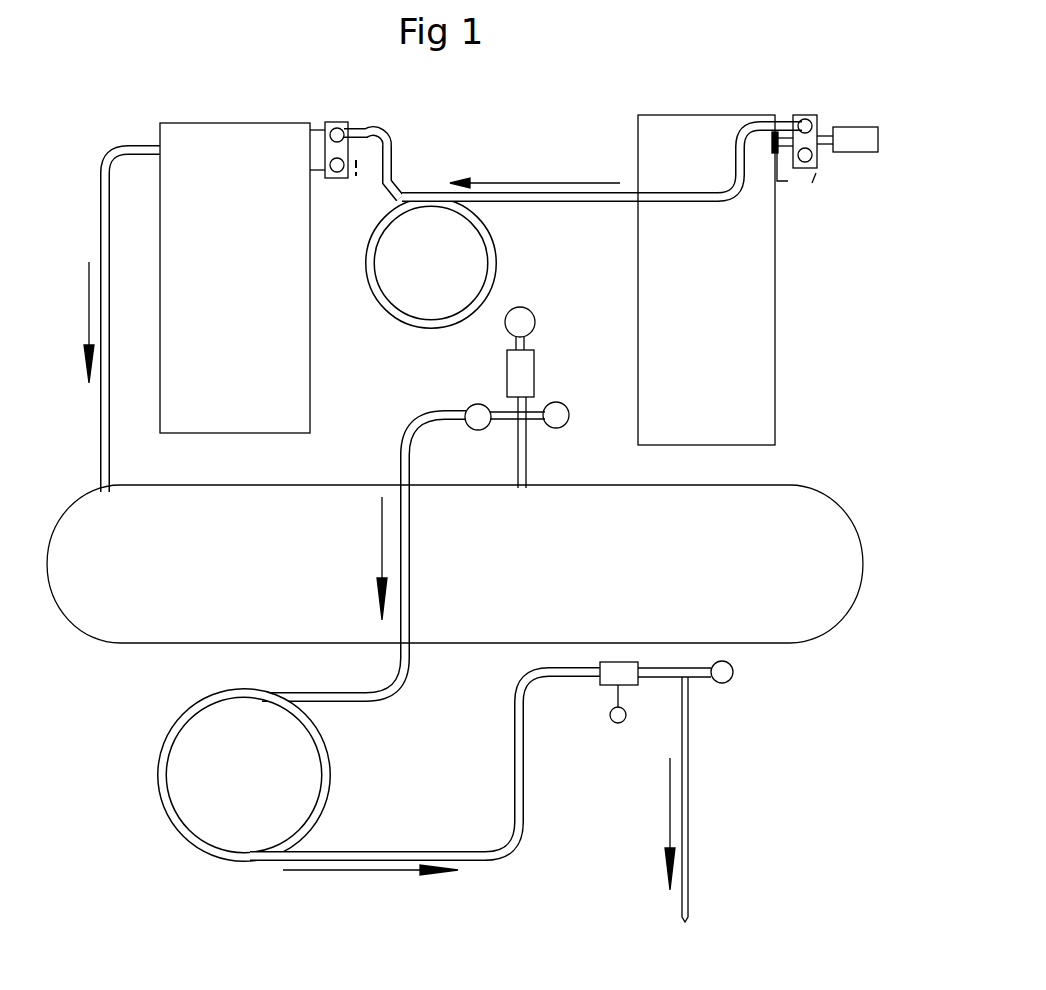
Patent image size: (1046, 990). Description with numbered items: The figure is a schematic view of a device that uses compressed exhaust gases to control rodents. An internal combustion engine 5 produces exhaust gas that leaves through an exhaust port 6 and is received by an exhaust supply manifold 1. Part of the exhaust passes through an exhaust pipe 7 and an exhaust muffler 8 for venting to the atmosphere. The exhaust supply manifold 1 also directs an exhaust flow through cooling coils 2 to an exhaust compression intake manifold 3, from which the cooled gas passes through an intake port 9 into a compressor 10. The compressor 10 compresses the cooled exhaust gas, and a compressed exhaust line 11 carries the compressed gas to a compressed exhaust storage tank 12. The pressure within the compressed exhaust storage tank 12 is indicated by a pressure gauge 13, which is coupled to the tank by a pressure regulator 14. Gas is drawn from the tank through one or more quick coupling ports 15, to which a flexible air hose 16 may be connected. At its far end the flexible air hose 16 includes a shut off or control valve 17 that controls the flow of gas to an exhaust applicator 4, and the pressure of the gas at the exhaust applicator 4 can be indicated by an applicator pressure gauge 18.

The exhaust supply manifold 1 is at (812, 183).
The cooling coils 2 is at (427, 165).
The exhaust compression intake manifold 3 is at (329, 113).
The exhaust applicator 4 is at (695, 679).
The internal combustion engine 5 is at (780, 258).
The exhaust port 6 is at (788, 164).
The exhaust pipe 7 is at (824, 133).
The exhaust muffler 8 is at (877, 122).
The intake port 9 is at (323, 120).
The compressor 10 is at (221, 118).
The compressed exhaust line 11 is at (98, 199).
The compressed exhaust storage tank 12 is at (223, 487).
The pressure gauge 13 is at (540, 320).
The pressure regulator 14 is at (537, 378).
The quick coupling ports 15 is at (483, 432).
The flexible air hose 16 is at (153, 786).
The shut off or control valve 17 is at (607, 688).
The applicator pressure gauge 18 is at (740, 672).